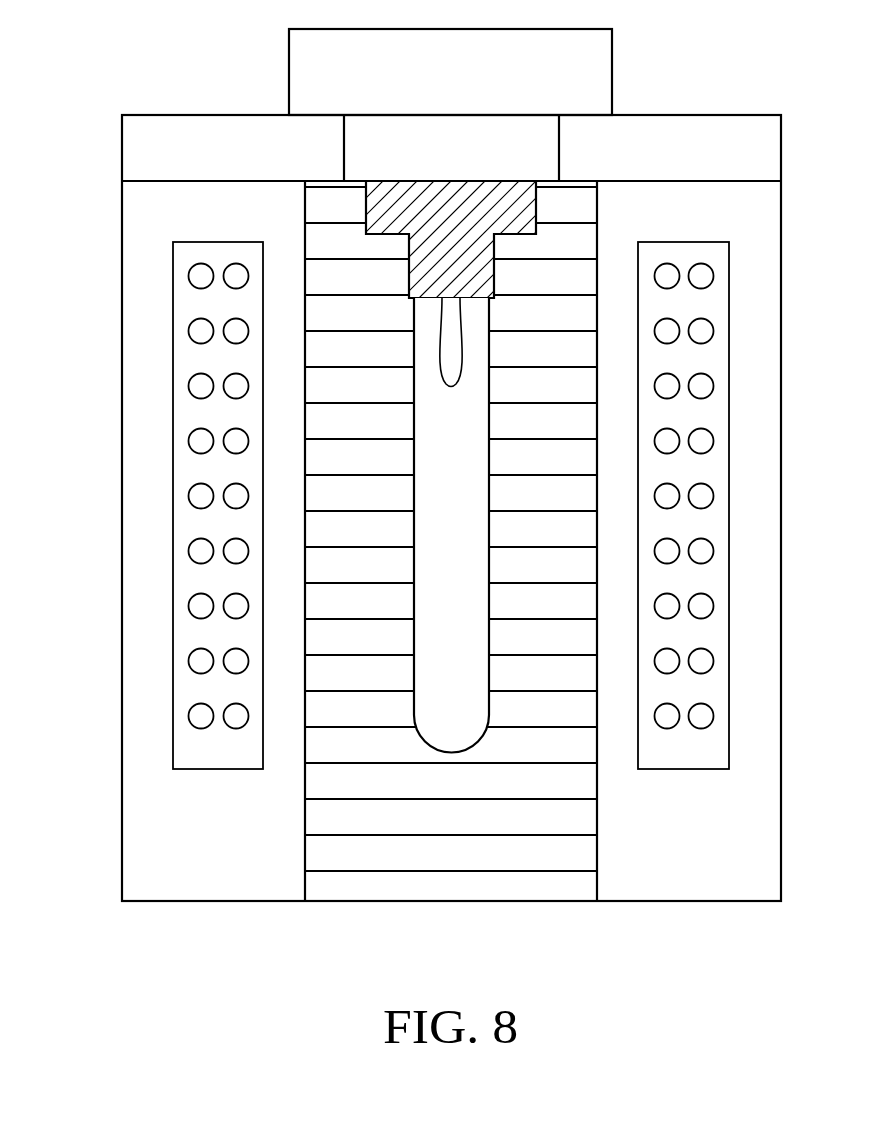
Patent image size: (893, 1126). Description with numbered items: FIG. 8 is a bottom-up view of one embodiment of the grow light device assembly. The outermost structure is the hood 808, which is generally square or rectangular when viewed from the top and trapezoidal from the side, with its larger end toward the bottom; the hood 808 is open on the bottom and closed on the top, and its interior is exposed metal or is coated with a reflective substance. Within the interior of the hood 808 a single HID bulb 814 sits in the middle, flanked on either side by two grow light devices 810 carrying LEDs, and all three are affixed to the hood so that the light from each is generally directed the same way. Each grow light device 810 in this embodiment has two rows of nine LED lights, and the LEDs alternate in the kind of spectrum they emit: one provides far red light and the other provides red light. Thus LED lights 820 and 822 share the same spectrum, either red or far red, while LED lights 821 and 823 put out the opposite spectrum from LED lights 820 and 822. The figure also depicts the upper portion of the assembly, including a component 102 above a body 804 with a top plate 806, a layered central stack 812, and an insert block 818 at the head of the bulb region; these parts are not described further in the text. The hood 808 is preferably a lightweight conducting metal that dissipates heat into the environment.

The component 102 is at (289, 72).
The housing body 804 is at (743, 115).
The top plate 806 is at (131, 150).
The hood 808 is at (135, 275).
The grow light device 810 is at (173, 320).
The layered stack 812 is at (304, 418).
The HID bulb 814 is at (414, 484).
The insert block 818 is at (366, 208).
The LED light 820 is at (201, 717).
The LED light 821 is at (201, 662).
The LED light 822 is at (201, 607).
The LED light 823 is at (201, 552).